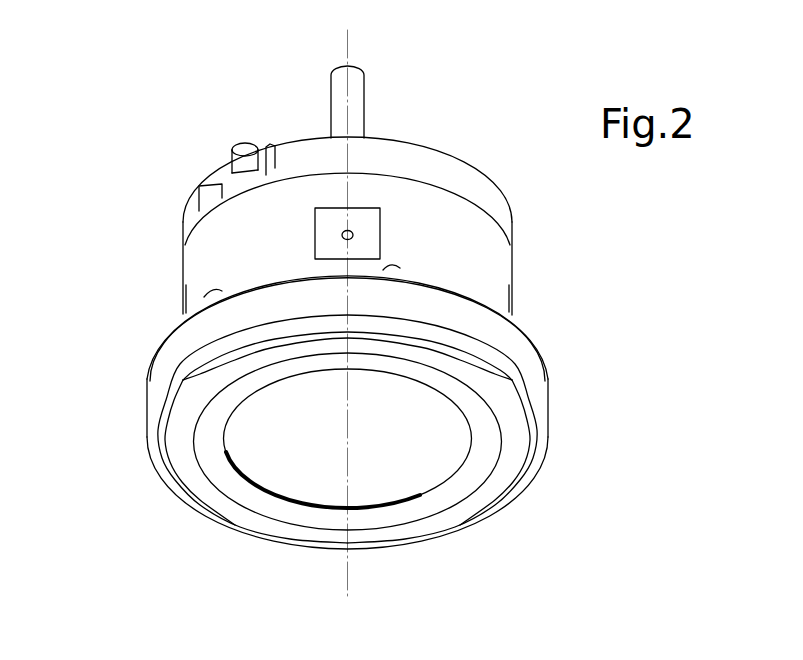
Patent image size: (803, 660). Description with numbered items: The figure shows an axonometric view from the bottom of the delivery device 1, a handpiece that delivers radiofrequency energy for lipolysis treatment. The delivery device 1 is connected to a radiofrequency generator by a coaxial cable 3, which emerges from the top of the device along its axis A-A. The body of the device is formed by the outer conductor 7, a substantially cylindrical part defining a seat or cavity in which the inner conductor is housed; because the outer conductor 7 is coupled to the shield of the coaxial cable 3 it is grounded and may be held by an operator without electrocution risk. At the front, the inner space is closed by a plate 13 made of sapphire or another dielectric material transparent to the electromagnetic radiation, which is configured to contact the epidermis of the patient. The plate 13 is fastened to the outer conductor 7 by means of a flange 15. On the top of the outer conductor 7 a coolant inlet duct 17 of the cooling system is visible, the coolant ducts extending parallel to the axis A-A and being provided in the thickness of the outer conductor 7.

The delivery device 1 is at (102, 214).
The coaxial cable 3 is at (350, 98).
The outer conductor 7 is at (487, 264).
The plate 13 is at (391, 478).
The flange 15 is at (214, 499).
The coolant inlet duct 17 is at (241, 163).